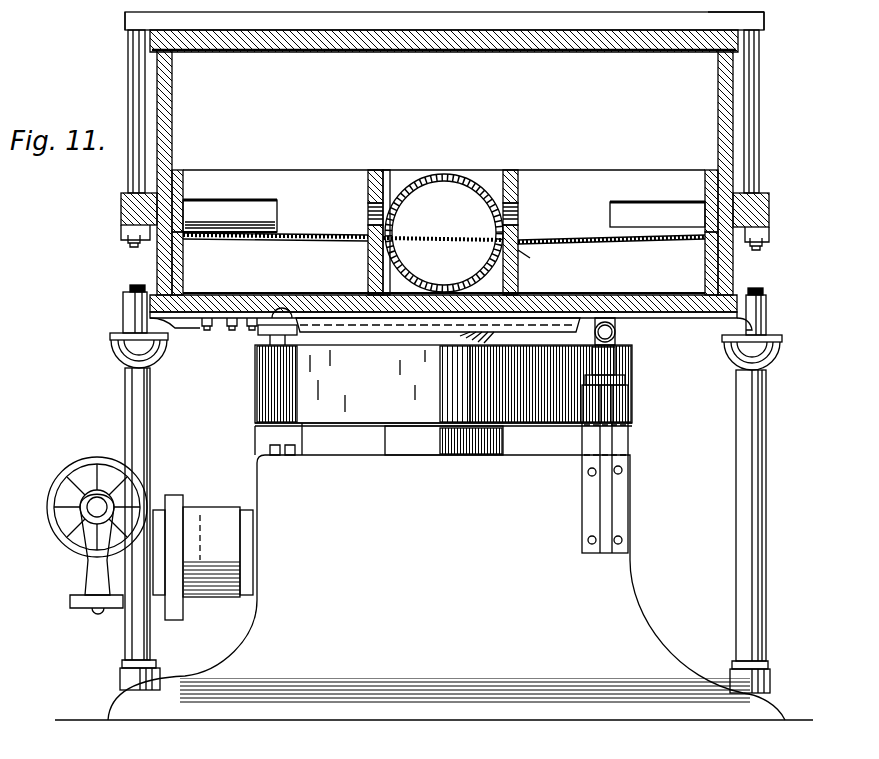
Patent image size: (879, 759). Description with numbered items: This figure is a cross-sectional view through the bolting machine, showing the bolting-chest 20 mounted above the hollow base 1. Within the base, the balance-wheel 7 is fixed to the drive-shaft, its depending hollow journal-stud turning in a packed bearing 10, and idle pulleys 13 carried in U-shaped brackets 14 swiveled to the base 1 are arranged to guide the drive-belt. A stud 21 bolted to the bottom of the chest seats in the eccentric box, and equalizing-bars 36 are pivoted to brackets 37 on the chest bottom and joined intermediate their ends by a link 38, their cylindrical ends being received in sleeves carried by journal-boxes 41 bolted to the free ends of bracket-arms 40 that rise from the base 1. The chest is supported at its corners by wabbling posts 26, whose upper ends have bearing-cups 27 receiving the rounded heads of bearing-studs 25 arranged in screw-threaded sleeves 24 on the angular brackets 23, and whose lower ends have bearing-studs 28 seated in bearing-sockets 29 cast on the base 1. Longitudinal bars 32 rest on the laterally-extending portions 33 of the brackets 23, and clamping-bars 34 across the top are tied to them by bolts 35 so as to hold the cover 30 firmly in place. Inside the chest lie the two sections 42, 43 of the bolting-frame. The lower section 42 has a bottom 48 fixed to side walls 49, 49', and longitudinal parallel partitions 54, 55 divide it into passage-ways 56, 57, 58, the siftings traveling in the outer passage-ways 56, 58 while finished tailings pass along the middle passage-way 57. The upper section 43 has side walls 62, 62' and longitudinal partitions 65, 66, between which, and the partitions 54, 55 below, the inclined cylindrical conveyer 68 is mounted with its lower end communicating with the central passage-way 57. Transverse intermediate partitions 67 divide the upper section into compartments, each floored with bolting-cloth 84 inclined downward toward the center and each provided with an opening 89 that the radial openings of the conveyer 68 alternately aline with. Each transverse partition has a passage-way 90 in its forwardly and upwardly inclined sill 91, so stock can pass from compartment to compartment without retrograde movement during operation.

The hollow base 1 is at (434, 587).
The balance-wheel 7 is at (443, 384).
The bearing 10 is at (423, 440).
The idle pulleys 13 is at (62, 478).
The U-shaped brackets 14 is at (90, 520).
The bolting-chest 20 is at (445, 172).
The stud 21 is at (455, 333).
The angular brackets 23 is at (133, 291).
The screw-threaded sleeves 24 is at (123, 313).
The screw-threaded bearing-studs 25 is at (760, 297).
The wabbling posts 26 is at (740, 483).
The bearing-cups 27 is at (122, 352).
The bearing-studs 28 is at (125, 664).
The bearing-sockets 29 is at (122, 682).
The cover 30 is at (556, 46).
The longitudinal bars 32 is at (121, 212).
The laterally-extending portions 33 is at (126, 233).
The clamping-bars 34 is at (764, 27).
The bolts 35 is at (138, 97).
The equalizing-bars 36 is at (612, 333).
The bracket 37 is at (232, 330).
The link 38 is at (310, 333).
The bracket-arms 40 is at (262, 440).
The journal-box 41 is at (617, 367).
The lower section of the bolting-frame 42 is at (274, 278).
The upper section of the bolting-frame 43 is at (550, 196).
The bottom 48 is at (316, 297).
The side wall 49 is at (691, 263).
The side wall 49' is at (198, 263).
The longitudinal parallel partition 54 is at (520, 260).
The longitudinal parallel partition 55 is at (342, 253).
The longitudinal passage-way 56 is at (602, 273).
The middle passage-way 57 is at (400, 282).
The longitudinal passage-way 58 is at (444, 248).
The side wall 62 is at (695, 188).
The side wall 62' is at (193, 182).
The longitudinal partition 65 is at (510, 172).
The longitudinal partition 66 is at (386, 172).
The intermediate partitions 67 is at (352, 166).
The inclined cylindrical conveyer 68 is at (432, 221).
The bolting-cloth 84 is at (282, 237).
The openings 89 is at (372, 213).
The passage-way 90 is at (226, 215).
The sill 91 is at (262, 222).